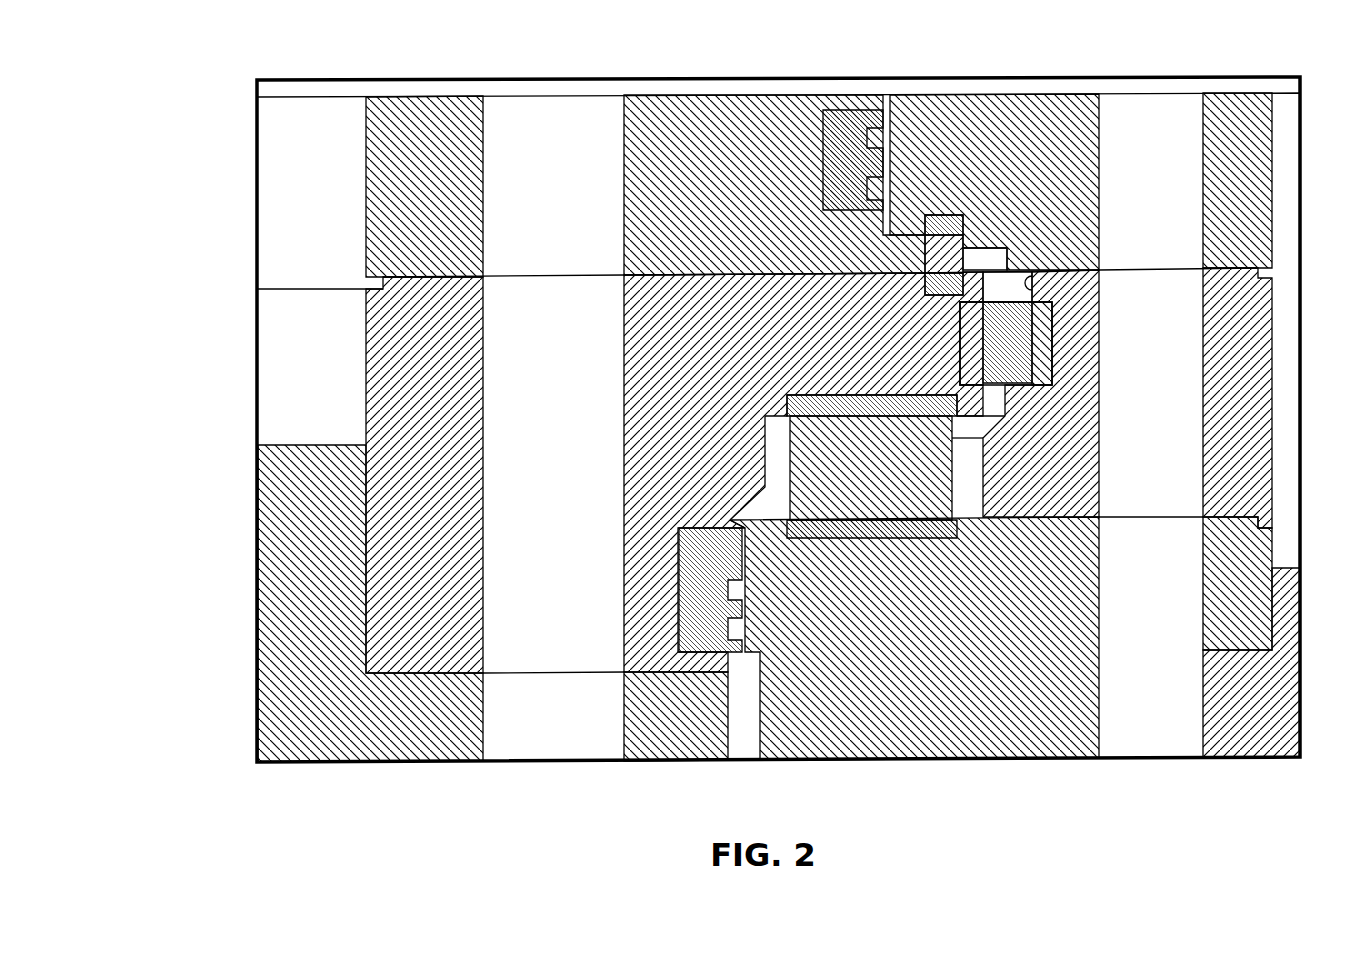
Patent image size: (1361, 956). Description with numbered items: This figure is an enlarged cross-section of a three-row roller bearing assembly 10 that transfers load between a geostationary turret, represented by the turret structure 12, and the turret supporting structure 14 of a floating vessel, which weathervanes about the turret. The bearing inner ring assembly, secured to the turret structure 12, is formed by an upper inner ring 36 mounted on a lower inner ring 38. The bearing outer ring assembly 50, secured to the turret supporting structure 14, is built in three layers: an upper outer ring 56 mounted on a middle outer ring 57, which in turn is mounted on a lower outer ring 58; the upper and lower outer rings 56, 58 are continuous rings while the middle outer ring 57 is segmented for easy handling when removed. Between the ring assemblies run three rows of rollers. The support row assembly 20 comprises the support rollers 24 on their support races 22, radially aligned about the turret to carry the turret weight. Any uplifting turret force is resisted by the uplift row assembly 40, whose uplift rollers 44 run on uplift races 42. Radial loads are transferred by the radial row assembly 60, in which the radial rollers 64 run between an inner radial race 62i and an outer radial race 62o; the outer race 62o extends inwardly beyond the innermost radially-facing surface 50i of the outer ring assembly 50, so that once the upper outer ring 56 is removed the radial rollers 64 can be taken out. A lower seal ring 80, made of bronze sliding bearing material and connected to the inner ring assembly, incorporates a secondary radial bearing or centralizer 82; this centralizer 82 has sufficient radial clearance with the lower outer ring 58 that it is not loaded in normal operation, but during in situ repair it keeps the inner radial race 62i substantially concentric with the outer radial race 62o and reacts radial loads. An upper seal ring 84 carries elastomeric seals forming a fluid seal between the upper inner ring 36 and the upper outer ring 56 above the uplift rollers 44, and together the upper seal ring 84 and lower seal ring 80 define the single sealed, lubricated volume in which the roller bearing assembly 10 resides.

The three-row roller bearing assembly 10 is at (708, 112).
The turret structure 12 is at (317, 717).
The turret supporting structure 14 is at (1053, 718).
The support row assembly 20 is at (948, 550).
The support races 22 is at (827, 532).
The support rollers 24 is at (862, 467).
The upper inner ring 36 is at (415, 174).
The lower inner ring 38 is at (417, 515).
The uplift row assembly 40 is at (930, 205).
The uplift races 42 is at (945, 223).
The uplift rollers 44 is at (962, 263).
The bearing outer ring assembly 50 is at (1222, 628).
The innermost radially-facing surface 50i is at (1035, 272).
The upper outer ring 56 is at (1258, 163).
The middle outer ring 57 is at (1255, 458).
The lower outer ring 58 is at (1253, 558).
The radial row assembly 60 is at (1078, 348).
The inner radial race 62i is at (973, 320).
The outer radial race 62o is at (1042, 355).
The radial rollers 64 is at (1008, 335).
The lower seal ring 80 is at (662, 590).
The secondary radial bearing or centralizer 82 is at (700, 617).
The upper seal ring 84 is at (846, 133).